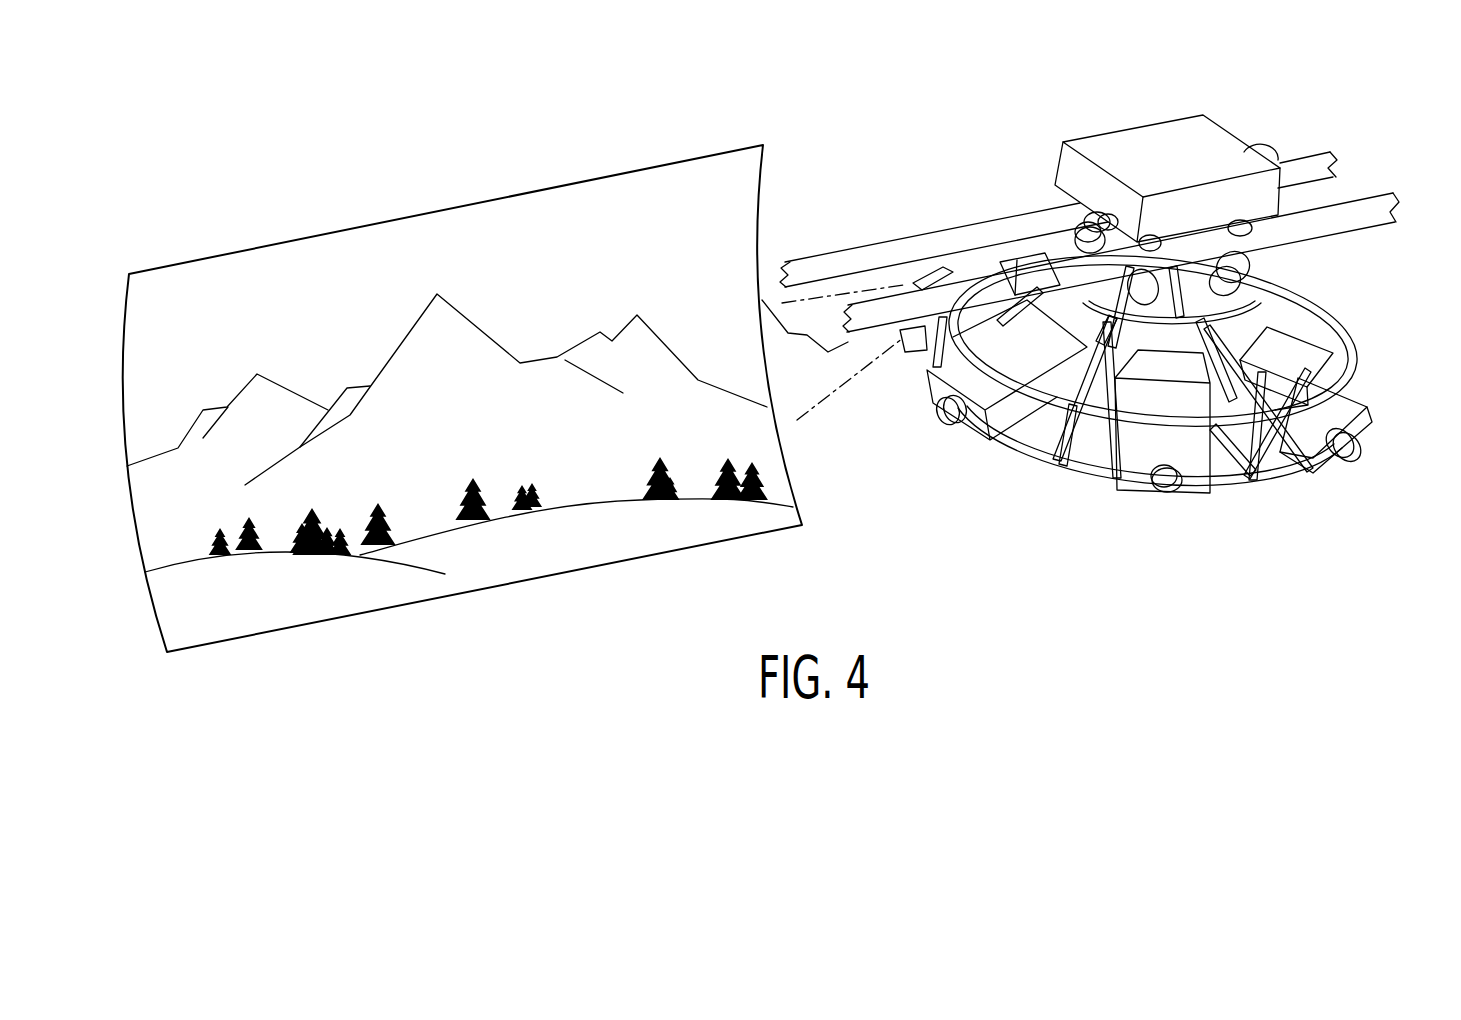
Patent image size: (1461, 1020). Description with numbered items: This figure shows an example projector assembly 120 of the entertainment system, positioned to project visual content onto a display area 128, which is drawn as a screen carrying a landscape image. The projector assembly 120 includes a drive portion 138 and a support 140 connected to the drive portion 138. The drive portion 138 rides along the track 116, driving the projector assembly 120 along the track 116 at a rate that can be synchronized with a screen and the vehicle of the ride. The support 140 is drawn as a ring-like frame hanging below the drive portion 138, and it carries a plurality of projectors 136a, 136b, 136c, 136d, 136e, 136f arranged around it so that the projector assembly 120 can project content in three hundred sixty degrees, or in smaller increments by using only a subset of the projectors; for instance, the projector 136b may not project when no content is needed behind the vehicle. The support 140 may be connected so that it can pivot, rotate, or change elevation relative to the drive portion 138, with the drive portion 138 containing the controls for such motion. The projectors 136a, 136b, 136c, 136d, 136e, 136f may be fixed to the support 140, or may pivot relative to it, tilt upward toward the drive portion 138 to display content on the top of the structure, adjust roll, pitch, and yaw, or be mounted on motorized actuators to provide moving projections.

The track 116 is at (832, 352).
The projector assembly 120 is at (1167, 112).
The display area 128 is at (388, 222).
The projector 136a is at (905, 352).
The projector 136b is at (980, 430).
The projector 136c is at (1131, 478).
The projector 136d is at (1360, 422).
The projector 136e is at (1343, 340).
The projector 136f is at (1037, 238).
The drive portion 138 is at (1340, 97).
The support 140 is at (1317, 307).